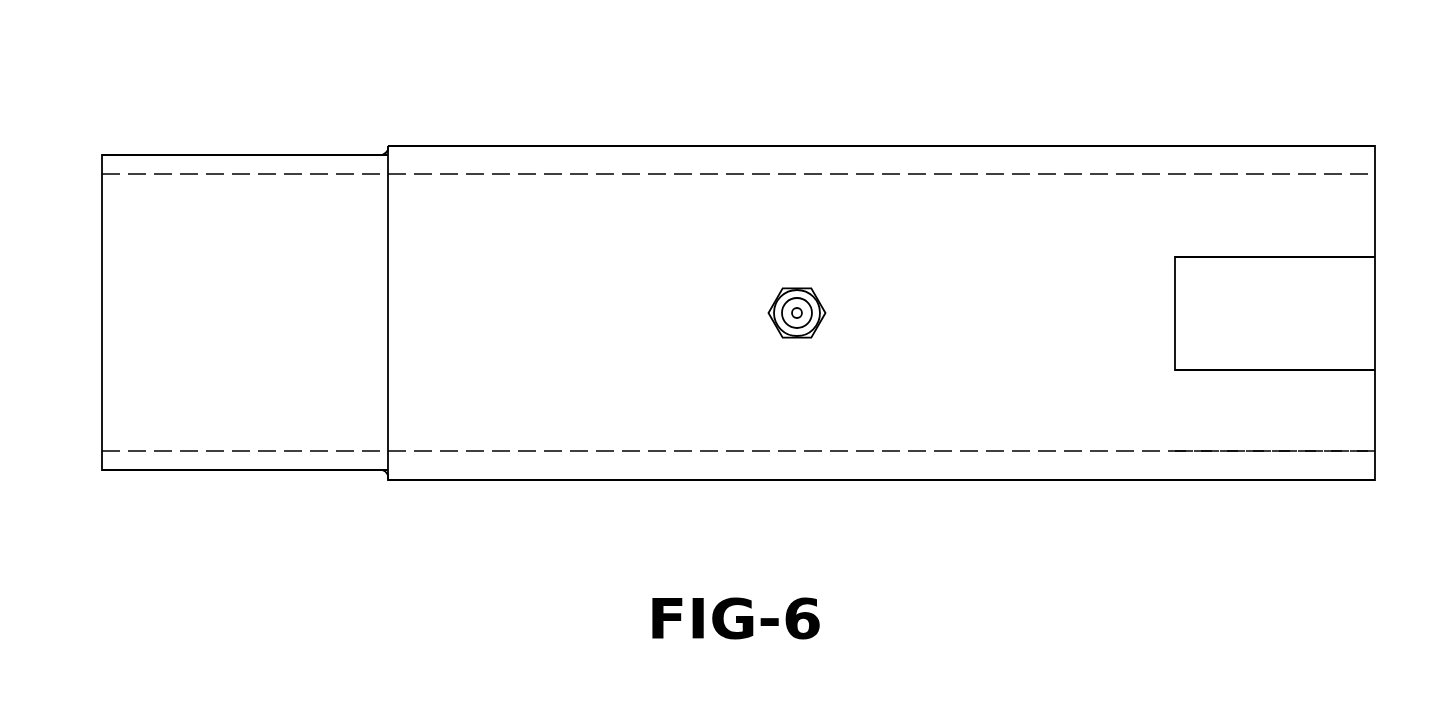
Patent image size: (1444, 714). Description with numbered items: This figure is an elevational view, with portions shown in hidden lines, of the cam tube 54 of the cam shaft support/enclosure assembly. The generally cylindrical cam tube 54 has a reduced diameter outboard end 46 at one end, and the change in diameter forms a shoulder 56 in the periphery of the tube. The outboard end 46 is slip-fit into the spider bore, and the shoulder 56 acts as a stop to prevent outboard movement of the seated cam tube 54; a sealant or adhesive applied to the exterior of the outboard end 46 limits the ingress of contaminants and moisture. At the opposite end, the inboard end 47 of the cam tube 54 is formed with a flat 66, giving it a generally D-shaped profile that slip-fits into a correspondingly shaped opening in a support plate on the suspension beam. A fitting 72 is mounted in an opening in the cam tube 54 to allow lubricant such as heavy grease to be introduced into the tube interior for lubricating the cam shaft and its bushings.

The reduced diameter outboard end 46 is at (207, 420).
The shoulder 56 is at (385, 152).
The cam tube 54 is at (893, 147).
The flat 66 is at (1322, 323).
The inboard end 47 is at (1230, 406).
The fitting 72 is at (795, 311).